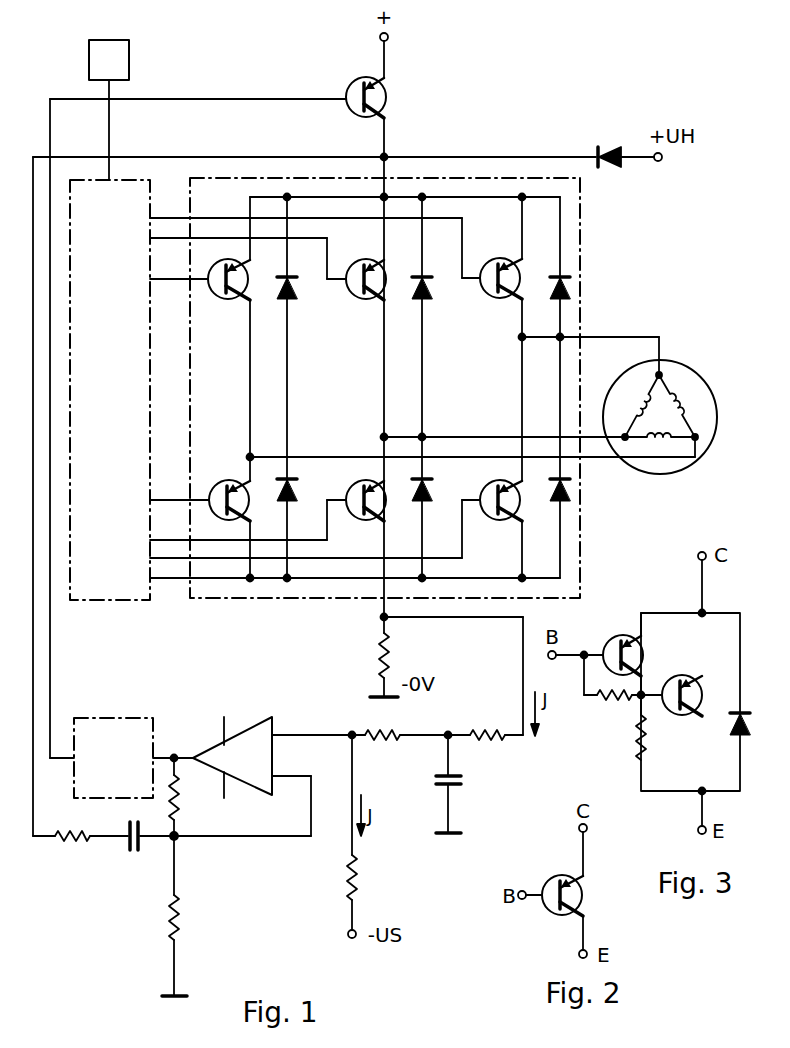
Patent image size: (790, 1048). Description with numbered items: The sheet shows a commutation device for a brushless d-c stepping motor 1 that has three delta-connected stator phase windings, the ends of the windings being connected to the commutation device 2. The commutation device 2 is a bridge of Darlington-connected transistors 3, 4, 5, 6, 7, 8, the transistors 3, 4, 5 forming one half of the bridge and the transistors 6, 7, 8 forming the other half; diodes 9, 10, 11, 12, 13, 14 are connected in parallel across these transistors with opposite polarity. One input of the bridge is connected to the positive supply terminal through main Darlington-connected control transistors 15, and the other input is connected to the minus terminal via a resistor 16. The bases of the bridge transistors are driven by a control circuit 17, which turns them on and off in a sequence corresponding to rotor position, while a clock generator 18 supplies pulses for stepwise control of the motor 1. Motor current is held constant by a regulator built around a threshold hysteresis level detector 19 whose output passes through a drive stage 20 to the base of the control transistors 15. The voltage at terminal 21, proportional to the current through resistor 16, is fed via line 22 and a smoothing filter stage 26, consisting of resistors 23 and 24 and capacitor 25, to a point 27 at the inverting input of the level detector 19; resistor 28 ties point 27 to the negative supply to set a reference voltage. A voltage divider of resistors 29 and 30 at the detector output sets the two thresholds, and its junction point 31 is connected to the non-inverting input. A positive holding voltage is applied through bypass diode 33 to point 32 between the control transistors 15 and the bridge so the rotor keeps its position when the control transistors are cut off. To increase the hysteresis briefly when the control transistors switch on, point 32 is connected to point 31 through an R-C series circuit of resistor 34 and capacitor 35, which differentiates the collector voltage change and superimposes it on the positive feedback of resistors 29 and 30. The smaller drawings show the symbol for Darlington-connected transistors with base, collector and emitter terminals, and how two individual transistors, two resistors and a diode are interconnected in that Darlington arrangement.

The stepping motor 1 is at (683, 368).
The commutation device 2 is at (463, 403).
The Darlington-connected transistor 3 is at (215, 296).
The Darlington-connected transistor 4 is at (353, 296).
The Darlington-connected transistor 5 is at (487, 295).
The Darlington-connected transistor 6 is at (220, 482).
The Darlington-connected transistor 7 is at (350, 486).
The Darlington-connected transistor 8 is at (486, 486).
The diode 9 is at (292, 298).
The diode 10 is at (427, 298).
The diode 11 is at (555, 298).
The diode 12 is at (292, 500).
The diode 13 is at (427, 500).
The diode 14 is at (555, 500).
The control transistors 15 is at (388, 97).
The resistor 16 is at (378, 655).
The control circuit 17 is at (110, 390).
The clock generator 18 is at (109, 110).
The level detector 19 is at (262, 785).
The drive stage 20 is at (113, 758).
The terminal 21 is at (380, 618).
The line 22 is at (522, 636).
The resistor 23 is at (480, 744).
The resistor 24 is at (382, 752).
The capacitor 25 is at (458, 785).
The smoothing filter stage 26 is at (432, 753).
The point 27 is at (350, 738).
The resistor 28 is at (362, 875).
The resistor 29 is at (180, 795).
The resistor 30 is at (182, 917).
The junction point 31 is at (187, 849).
The point 32 is at (399, 145).
The bypass diode 33 is at (616, 150).
The resistor 34 is at (68, 845).
The capacitor 35 is at (133, 852).